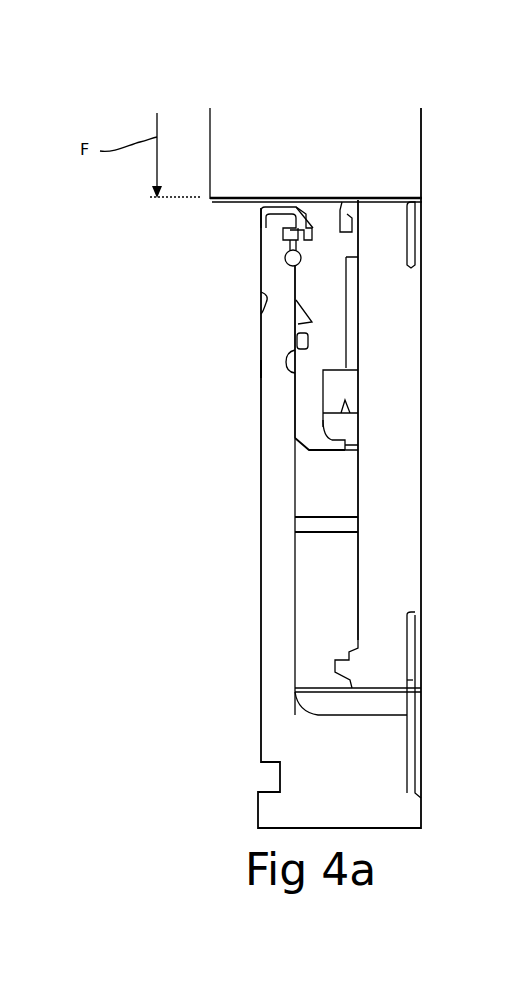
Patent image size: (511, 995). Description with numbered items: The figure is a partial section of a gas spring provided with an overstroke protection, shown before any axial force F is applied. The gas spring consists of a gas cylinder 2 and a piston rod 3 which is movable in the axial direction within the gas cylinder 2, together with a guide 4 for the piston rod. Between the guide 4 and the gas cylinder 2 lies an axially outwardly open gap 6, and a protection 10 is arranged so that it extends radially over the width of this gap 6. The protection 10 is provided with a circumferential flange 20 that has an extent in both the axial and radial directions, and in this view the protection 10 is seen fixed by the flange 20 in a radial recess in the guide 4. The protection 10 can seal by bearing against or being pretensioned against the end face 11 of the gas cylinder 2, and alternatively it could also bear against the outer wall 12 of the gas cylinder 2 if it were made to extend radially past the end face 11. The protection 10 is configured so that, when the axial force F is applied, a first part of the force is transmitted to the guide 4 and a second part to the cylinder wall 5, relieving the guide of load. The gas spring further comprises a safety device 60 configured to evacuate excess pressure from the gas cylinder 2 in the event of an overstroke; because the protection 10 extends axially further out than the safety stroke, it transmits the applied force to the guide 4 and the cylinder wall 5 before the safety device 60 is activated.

The gas cylinder 2 is at (256, 534).
The piston rod 3 is at (397, 308).
The guide 4 is at (322, 303).
The cylinder wall 5 is at (275, 427).
The gap 6 is at (285, 254).
The protection 10 is at (254, 222).
The end face 11 is at (256, 225).
The outer wall 12 is at (249, 369).
The circumferential flange 20 is at (323, 199).
The safety device 60 is at (300, 360).